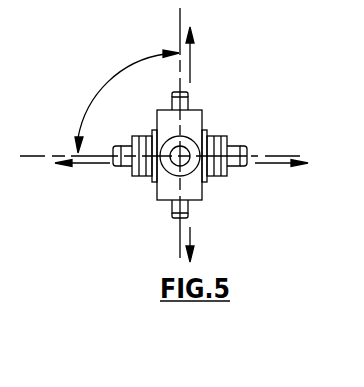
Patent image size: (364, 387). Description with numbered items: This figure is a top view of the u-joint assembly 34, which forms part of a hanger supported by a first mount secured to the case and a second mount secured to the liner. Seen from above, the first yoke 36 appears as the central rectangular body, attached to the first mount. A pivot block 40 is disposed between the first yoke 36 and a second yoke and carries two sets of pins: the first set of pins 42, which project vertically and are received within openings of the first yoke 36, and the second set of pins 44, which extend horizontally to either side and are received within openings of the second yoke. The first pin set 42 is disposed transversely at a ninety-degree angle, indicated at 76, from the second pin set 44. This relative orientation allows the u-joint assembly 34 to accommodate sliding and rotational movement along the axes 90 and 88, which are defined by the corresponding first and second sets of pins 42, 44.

The u-joint assembly 34 is at (80, 229).
The first yoke 36 is at (196, 192).
The pivot block 40 is at (207, 130).
The first set of pins 42 is at (172, 97).
The second set of pins 44 is at (236, 148).
The 90° angle 76 is at (93, 100).
The axis 88 is at (190, 65).
The axis 90 is at (82, 165).